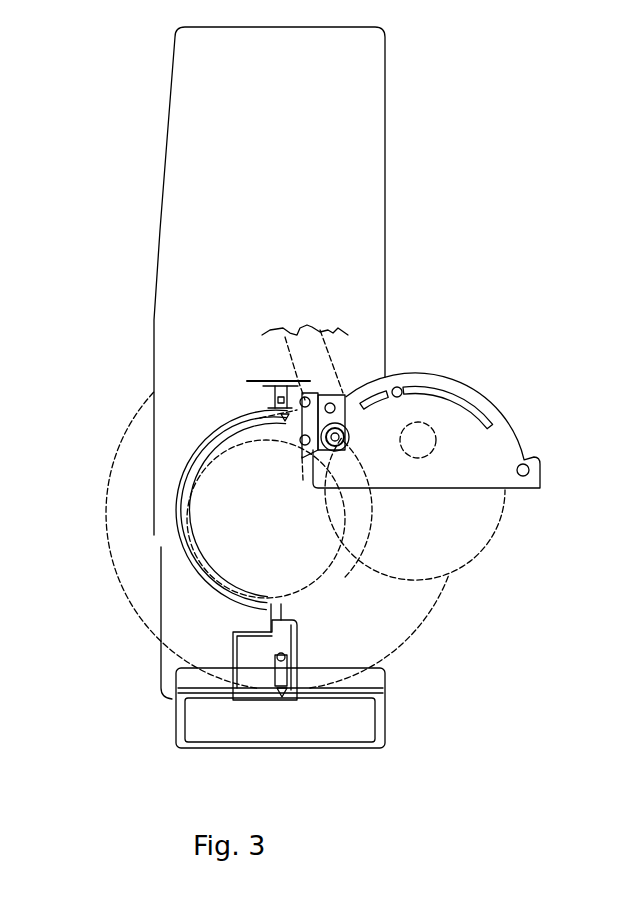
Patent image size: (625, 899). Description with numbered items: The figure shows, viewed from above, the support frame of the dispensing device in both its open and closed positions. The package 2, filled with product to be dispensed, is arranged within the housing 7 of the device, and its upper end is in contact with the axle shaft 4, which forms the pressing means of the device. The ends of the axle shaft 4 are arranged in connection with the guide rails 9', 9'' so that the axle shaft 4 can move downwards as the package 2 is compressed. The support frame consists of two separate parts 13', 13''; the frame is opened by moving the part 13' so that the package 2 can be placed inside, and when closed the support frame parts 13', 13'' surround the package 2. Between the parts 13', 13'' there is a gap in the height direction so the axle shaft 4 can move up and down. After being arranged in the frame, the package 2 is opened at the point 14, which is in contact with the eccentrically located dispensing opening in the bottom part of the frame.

The housing 7 is at (355, 78).
The axle shaft 4 is at (270, 403).
The guide rail 9'' is at (290, 379).
The support frame part 13' is at (426, 405).
The opening point 14 is at (417, 437).
The support frame part 13'' is at (197, 510).
The package 2 is at (448, 538).
The guide rail 9' is at (279, 703).